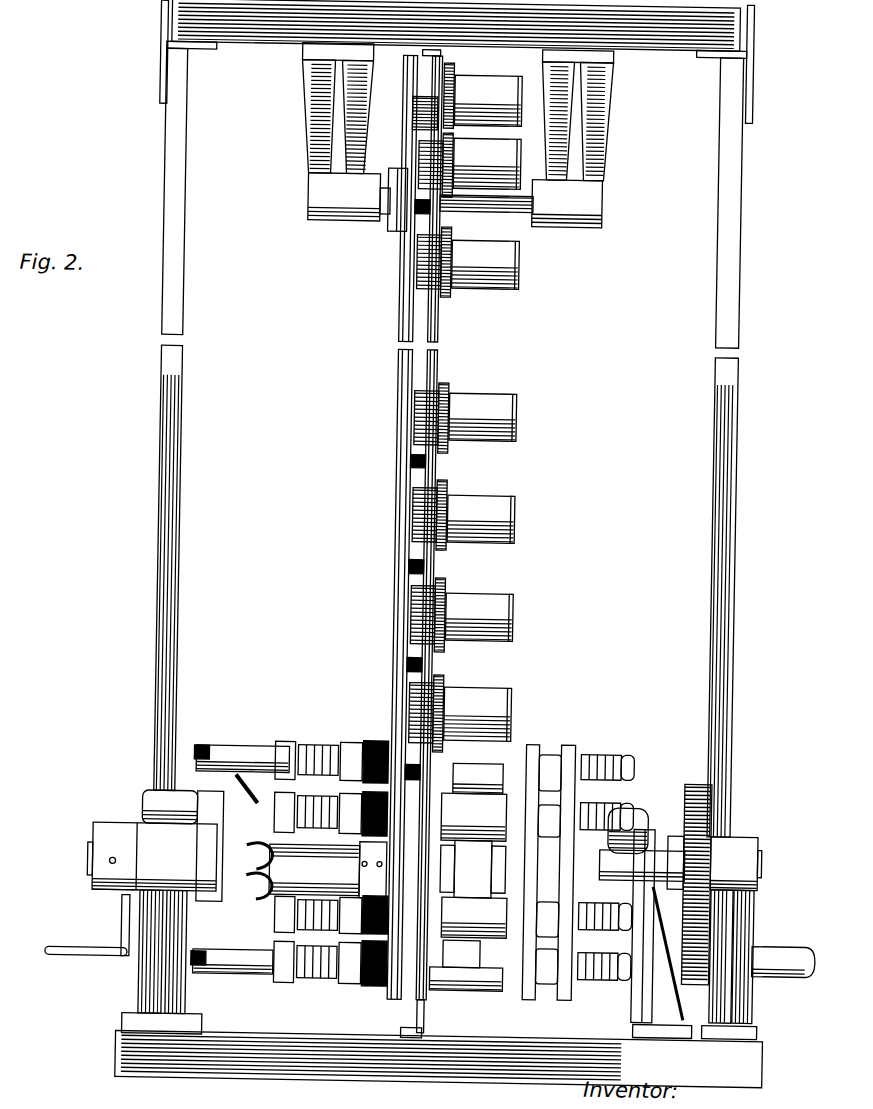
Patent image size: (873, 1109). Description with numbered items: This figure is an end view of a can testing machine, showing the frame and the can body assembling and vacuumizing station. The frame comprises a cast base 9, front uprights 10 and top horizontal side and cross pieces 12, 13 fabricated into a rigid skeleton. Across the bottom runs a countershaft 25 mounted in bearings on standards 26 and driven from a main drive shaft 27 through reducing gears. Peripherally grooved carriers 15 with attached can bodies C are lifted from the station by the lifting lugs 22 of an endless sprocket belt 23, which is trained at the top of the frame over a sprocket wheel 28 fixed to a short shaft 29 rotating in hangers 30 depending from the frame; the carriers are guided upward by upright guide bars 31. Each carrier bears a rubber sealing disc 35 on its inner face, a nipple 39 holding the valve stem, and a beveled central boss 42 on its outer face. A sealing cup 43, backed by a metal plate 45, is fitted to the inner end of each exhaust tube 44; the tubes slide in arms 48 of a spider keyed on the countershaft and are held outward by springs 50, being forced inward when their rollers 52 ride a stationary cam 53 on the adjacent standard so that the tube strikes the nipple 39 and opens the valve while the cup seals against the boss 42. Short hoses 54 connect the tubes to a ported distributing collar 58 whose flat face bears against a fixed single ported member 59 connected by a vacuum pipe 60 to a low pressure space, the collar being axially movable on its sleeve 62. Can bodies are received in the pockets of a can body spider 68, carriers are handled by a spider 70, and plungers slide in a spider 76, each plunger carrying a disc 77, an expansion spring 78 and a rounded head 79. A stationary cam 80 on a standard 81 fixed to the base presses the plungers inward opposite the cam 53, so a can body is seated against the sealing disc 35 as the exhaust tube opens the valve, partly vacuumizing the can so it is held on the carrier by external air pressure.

The cast base 9 is at (318, 1082).
The front upright 10 is at (166, 602).
The top horizontal side piece 12 is at (190, 54).
The top horizontal cross piece 13 is at (741, 31).
The carrier 15 is at (424, 406).
The lifting lug 22 is at (405, 123).
The endless sprocket belt 23 is at (409, 519).
The countershaft 25 is at (95, 865).
The standard 26 is at (146, 984).
The main drive shaft 27 is at (797, 952).
The sprocket wheel 28 is at (390, 237).
The short shaft 29 is at (517, 213).
The hanger 30 is at (311, 133).
The upright guide bar 31 is at (432, 679).
The sealing disc 35 is at (444, 382).
The nipple 39 is at (407, 269).
The central boss 42 is at (416, 446).
The sealing cup 43 is at (383, 740).
The exhaust tube 44 is at (231, 755).
The metal plate 45 is at (373, 988).
The spider arm 48 is at (353, 744).
The spring 50 is at (358, 975).
The roller 52 is at (202, 748).
The stationary cam 53 is at (193, 798).
The hose 54 is at (250, 866).
The distributing collar 58 is at (208, 791).
The single ported member 59 is at (111, 903).
The vacuum pipe 60 is at (128, 931).
The sleeve 62 is at (261, 793).
The can body spider 68 is at (486, 991).
The carrier handling spider 70 is at (441, 1004).
The plunger spider 76 is at (660, 847).
The disc 77 is at (530, 743).
The expansion spring 78 is at (608, 749).
The rounded head 79 is at (635, 756).
The stationary cam 80 is at (636, 809).
The standard 81 is at (648, 1002).
The can body C is at (495, 510).